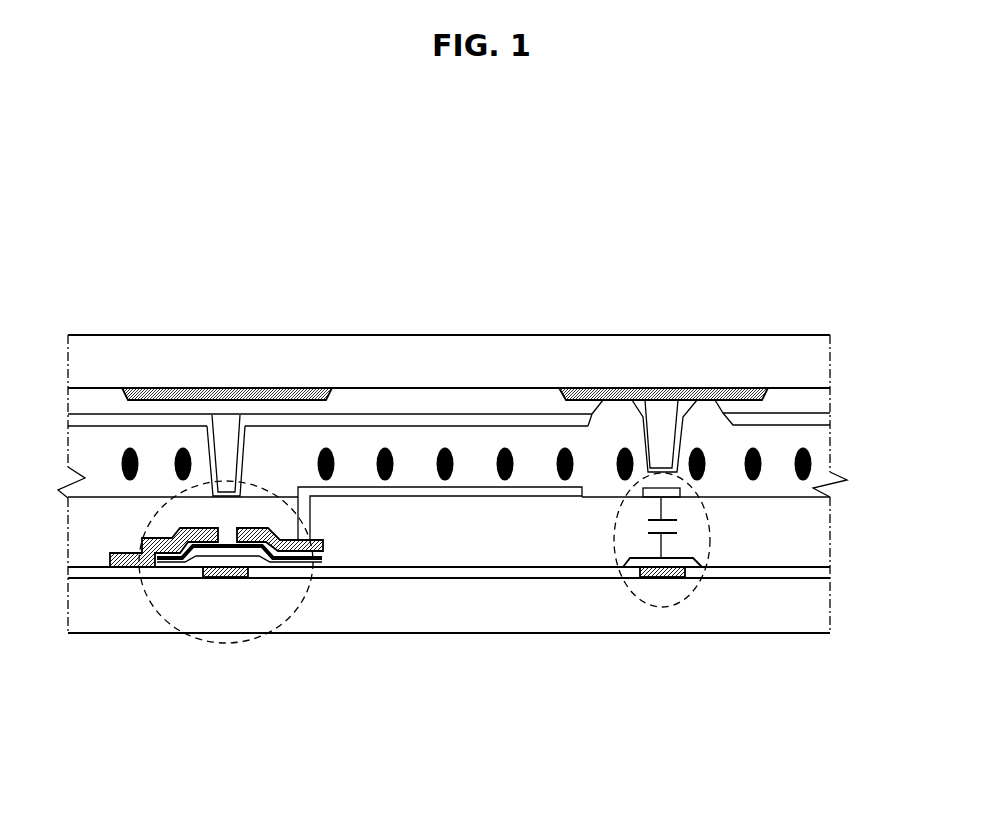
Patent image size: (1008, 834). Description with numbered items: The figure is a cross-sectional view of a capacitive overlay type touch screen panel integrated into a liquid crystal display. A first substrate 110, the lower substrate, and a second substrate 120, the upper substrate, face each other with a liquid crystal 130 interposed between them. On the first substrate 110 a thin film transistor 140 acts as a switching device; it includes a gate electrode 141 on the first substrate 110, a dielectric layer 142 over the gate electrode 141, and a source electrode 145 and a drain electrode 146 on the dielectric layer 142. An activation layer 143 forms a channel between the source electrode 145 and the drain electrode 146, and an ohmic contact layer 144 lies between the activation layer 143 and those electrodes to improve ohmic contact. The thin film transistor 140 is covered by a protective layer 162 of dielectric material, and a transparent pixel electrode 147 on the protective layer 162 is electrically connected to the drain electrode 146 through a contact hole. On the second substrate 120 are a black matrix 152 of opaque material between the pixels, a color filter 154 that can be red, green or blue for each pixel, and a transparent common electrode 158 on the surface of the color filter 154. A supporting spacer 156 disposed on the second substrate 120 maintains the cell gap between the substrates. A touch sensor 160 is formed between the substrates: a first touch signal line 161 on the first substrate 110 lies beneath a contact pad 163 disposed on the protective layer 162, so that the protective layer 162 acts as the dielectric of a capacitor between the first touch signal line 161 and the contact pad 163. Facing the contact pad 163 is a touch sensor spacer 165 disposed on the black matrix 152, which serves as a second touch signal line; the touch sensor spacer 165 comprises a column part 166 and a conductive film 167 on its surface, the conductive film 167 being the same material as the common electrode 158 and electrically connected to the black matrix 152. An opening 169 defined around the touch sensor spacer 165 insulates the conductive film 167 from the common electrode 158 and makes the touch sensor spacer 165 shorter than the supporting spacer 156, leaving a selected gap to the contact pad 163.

The first substrate 110 is at (815, 600).
The second substrate 120 is at (818, 366).
The liquid crystal 130 is at (813, 466).
The thin film transistor 140 is at (228, 645).
The gate electrode 141 is at (237, 578).
The dielectric layer 142 is at (402, 568).
The activation layer 143 is at (178, 553).
The ohmic contact layer 144 is at (160, 557).
The source electrode 145 is at (140, 563).
The drain electrode 146 is at (293, 552).
The pixel electrode 147 is at (480, 497).
The black matrix 152 is at (290, 387).
The color filter 154 is at (110, 400).
The supporting spacer 156 is at (227, 427).
The common electrode 158 is at (400, 418).
The touch sensor 160 is at (690, 593).
The first touch signal line 161 is at (655, 578).
The protective layer 162 is at (815, 531).
The contact pad 163 is at (650, 492).
The touch sensor spacer 165 is at (668, 255).
The column part 166 is at (660, 413).
The conductive film 167 is at (632, 400).
The opening 169 is at (830, 428).